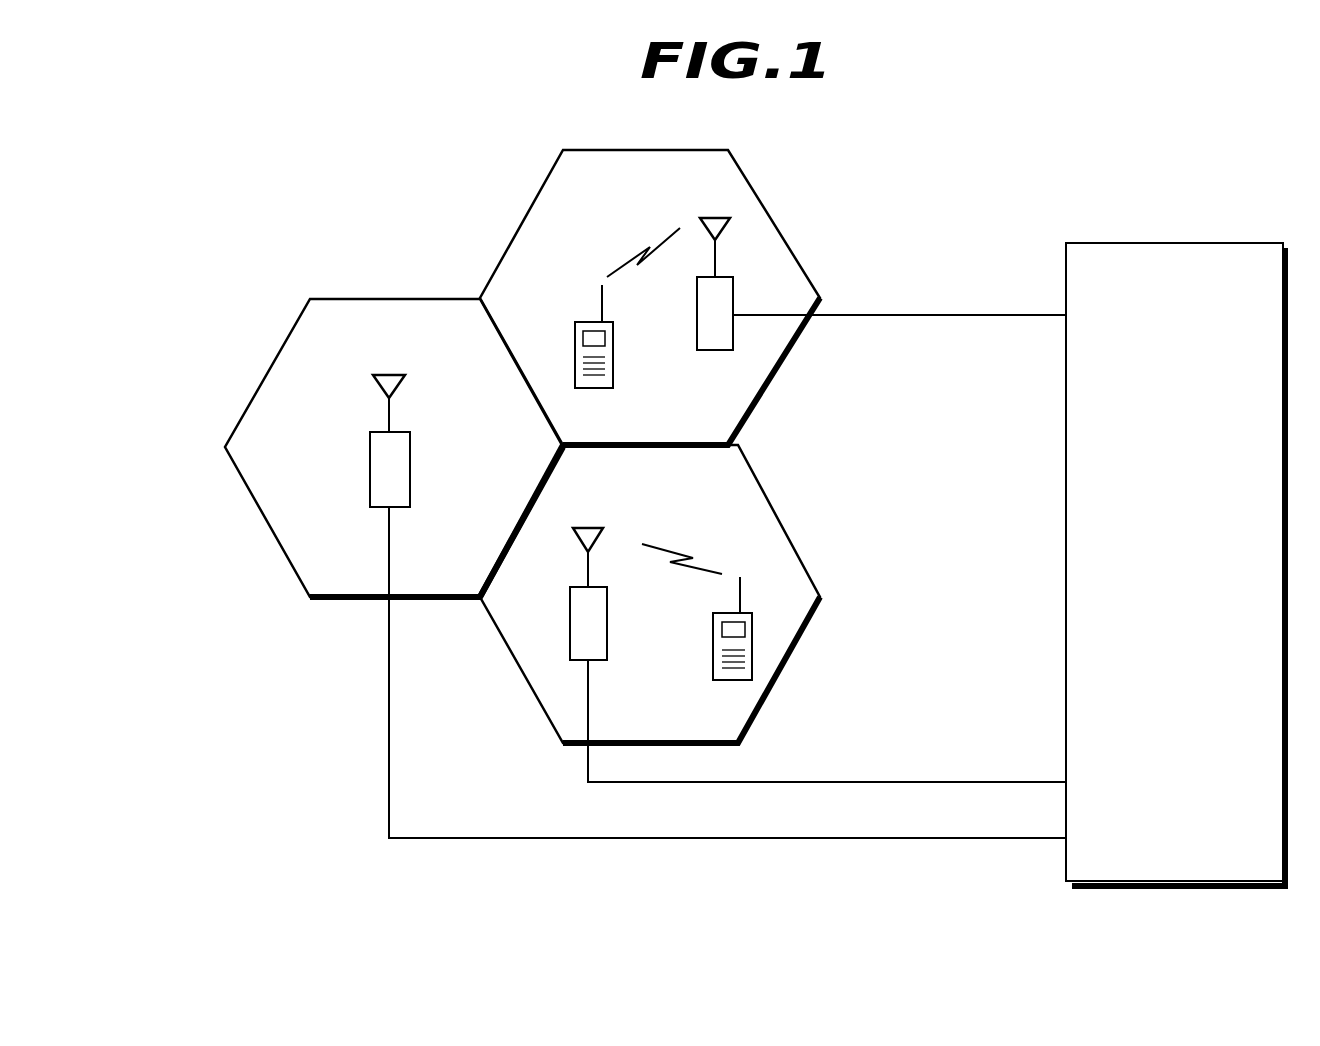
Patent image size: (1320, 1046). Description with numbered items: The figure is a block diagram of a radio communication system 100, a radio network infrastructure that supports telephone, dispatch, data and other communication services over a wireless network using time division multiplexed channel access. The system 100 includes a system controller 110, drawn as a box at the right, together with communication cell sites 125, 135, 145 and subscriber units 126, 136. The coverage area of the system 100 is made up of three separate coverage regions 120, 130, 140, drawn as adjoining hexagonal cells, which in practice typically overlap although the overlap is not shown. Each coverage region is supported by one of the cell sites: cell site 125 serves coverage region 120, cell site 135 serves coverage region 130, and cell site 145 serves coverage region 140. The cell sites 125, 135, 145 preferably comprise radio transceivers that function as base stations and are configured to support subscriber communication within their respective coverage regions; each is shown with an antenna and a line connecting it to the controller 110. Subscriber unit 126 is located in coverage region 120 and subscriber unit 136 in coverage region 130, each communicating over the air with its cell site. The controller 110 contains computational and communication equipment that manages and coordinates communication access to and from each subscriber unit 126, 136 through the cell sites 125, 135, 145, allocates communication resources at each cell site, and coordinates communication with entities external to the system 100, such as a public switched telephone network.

The radio communication system 100 is at (750, 925).
The system controller 110 is at (1193, 242).
The coverage region 120 is at (775, 215).
The communication cell site 125 is at (717, 352).
The subscriber unit 126 is at (575, 323).
The coverage region 130 is at (785, 528).
The communication cell site 135 is at (570, 623).
The subscriber unit 136 is at (713, 647).
The coverage region 140 is at (283, 346).
The communication cell site 145 is at (370, 477).